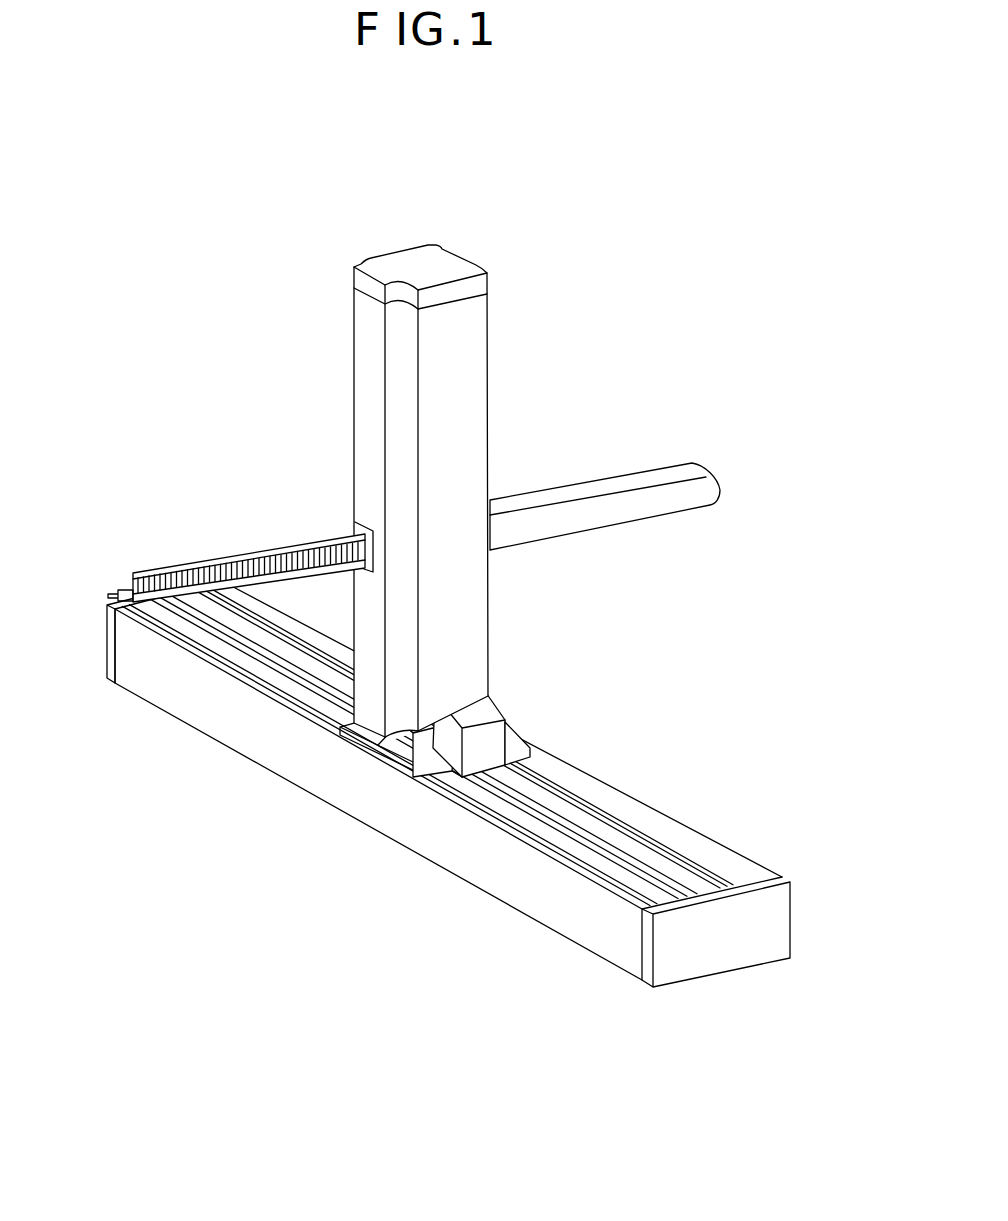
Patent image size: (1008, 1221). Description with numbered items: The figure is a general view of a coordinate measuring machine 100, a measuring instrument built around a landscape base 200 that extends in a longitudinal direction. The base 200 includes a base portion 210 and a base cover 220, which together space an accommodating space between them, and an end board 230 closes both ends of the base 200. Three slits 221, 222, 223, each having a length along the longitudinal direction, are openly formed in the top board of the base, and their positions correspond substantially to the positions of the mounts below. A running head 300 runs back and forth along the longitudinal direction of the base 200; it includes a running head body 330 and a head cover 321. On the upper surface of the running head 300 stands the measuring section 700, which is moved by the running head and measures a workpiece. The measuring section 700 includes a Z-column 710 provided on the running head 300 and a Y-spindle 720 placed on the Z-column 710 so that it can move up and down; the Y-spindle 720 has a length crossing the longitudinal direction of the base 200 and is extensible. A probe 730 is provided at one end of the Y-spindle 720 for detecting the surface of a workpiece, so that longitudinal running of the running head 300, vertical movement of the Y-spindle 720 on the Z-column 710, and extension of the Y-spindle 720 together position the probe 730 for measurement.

The coordinate measuring machine 100 is at (450, 603).
The base 200 is at (450, 821).
The base portion 210 is at (600, 944).
The base cover 220 is at (573, 880).
The slit 221 is at (721, 884).
The slit 222 is at (680, 889).
The slit 223 is at (632, 893).
The end board 230 is at (106, 673).
The running head 300 is at (398, 766).
The head cover 321 is at (496, 702).
The running head body 330 is at (523, 713).
The measuring section 700 is at (410, 491).
The Z-column 710 is at (478, 317).
The Y-spindle 720 is at (697, 505).
The probe 730 is at (128, 590).